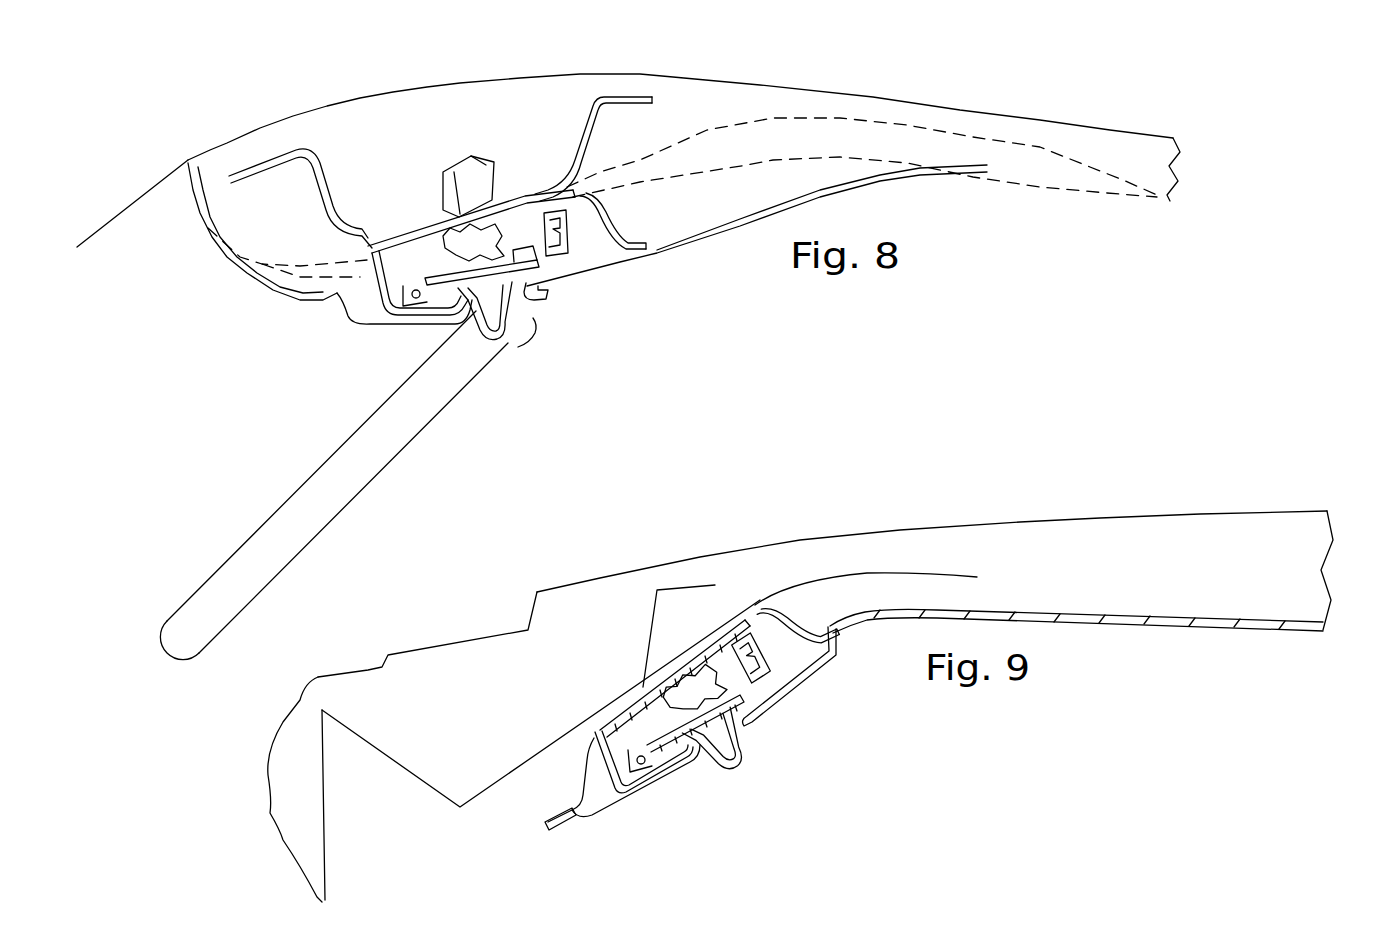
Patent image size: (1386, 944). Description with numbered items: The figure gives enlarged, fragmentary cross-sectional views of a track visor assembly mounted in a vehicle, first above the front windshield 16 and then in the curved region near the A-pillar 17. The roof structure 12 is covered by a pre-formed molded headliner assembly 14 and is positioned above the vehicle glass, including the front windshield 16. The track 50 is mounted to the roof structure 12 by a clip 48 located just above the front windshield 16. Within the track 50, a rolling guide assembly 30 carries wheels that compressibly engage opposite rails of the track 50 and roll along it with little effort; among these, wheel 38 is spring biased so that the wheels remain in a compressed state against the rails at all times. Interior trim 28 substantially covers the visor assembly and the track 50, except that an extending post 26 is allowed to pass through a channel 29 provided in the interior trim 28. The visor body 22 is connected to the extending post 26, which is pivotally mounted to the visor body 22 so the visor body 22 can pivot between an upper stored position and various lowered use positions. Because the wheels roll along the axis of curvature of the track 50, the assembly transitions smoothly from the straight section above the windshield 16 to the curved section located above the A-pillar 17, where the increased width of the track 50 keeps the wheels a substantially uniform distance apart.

In FIG. 8, the roof structure 12 is at (672, 75).
In FIG. 9, the roof structure 12 is at (795, 543).
In FIG. 8, the pre-formed molded headliner assembly 14 is at (852, 137).
In FIG. 8, the front windshield 16 is at (118, 210).
In FIG. 9, the A-pillar 17 is at (322, 786).
In FIG. 8, the visor body 22 is at (304, 536).
In FIG. 8, the extending post 26 is at (517, 330).
In FIG. 9, the extending post 26 is at (743, 770).
In FIG. 8, the interior trim 28 is at (647, 250).
In FIG. 9, the interior trim 28 is at (848, 623).
In FIG. 8, the channel 29 is at (530, 310).
In FIG. 8, the rolling guide assembly 30 is at (547, 300).
In FIG. 8, the wheel 38 is at (560, 233).
In FIG. 9, the wheel 38 is at (763, 667).
In FIG. 8, the clip 48 is at (478, 182).
In FIG. 8, the track 50 is at (450, 240).
In FIG. 9, the track 50 is at (655, 698).